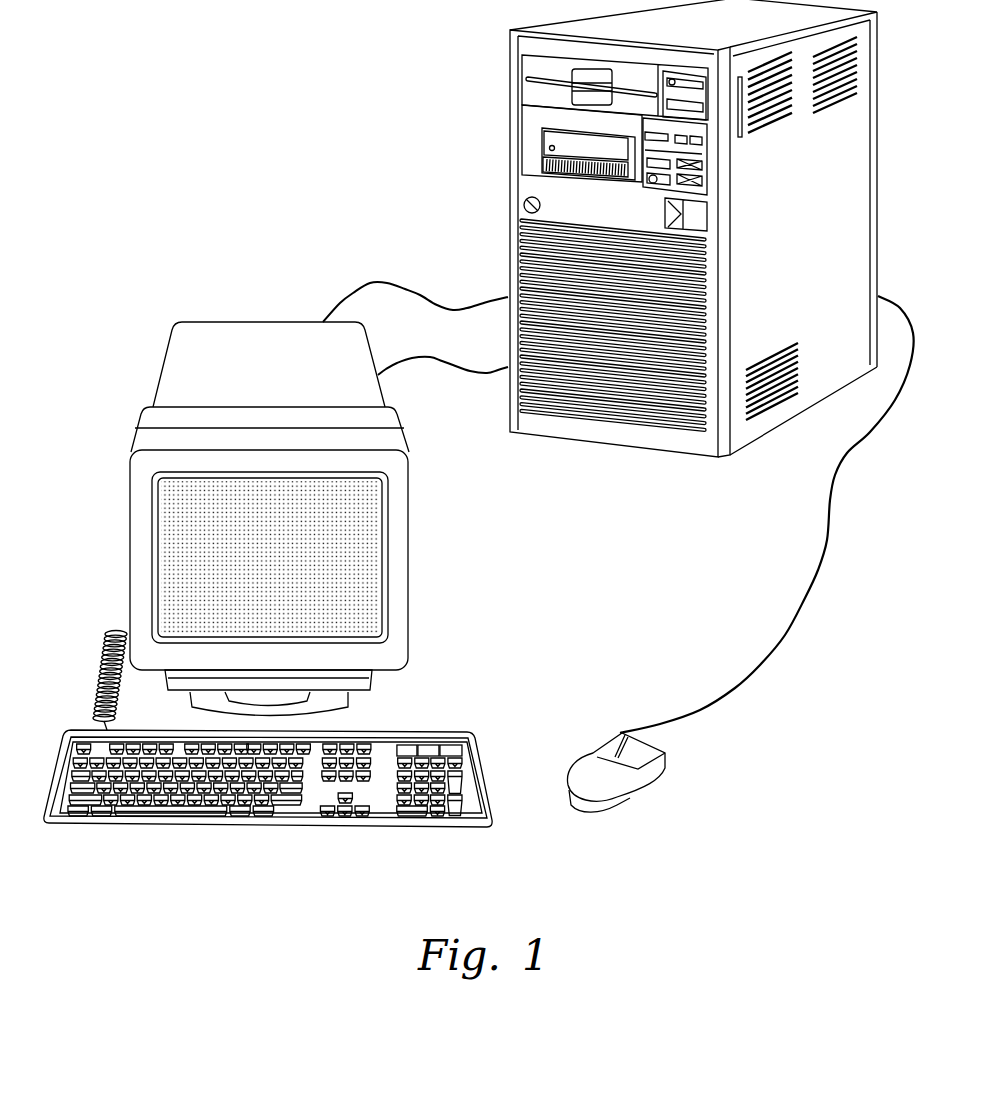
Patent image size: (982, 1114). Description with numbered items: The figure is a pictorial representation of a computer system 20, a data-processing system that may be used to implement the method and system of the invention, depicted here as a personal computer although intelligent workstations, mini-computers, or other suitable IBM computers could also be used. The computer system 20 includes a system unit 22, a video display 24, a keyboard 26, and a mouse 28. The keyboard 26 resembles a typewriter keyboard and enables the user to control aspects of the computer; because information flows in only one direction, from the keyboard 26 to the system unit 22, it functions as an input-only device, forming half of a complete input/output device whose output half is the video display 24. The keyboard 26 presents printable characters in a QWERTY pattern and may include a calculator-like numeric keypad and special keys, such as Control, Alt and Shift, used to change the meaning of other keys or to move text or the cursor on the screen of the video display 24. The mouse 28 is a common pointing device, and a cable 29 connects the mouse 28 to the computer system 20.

The computer system 20 is at (305, 200).
The system unit 22 is at (527, 188).
The video display 24 is at (284, 343).
The keyboard 26 is at (300, 825).
The mouse 28 is at (622, 793).
The cable 29 is at (773, 653).